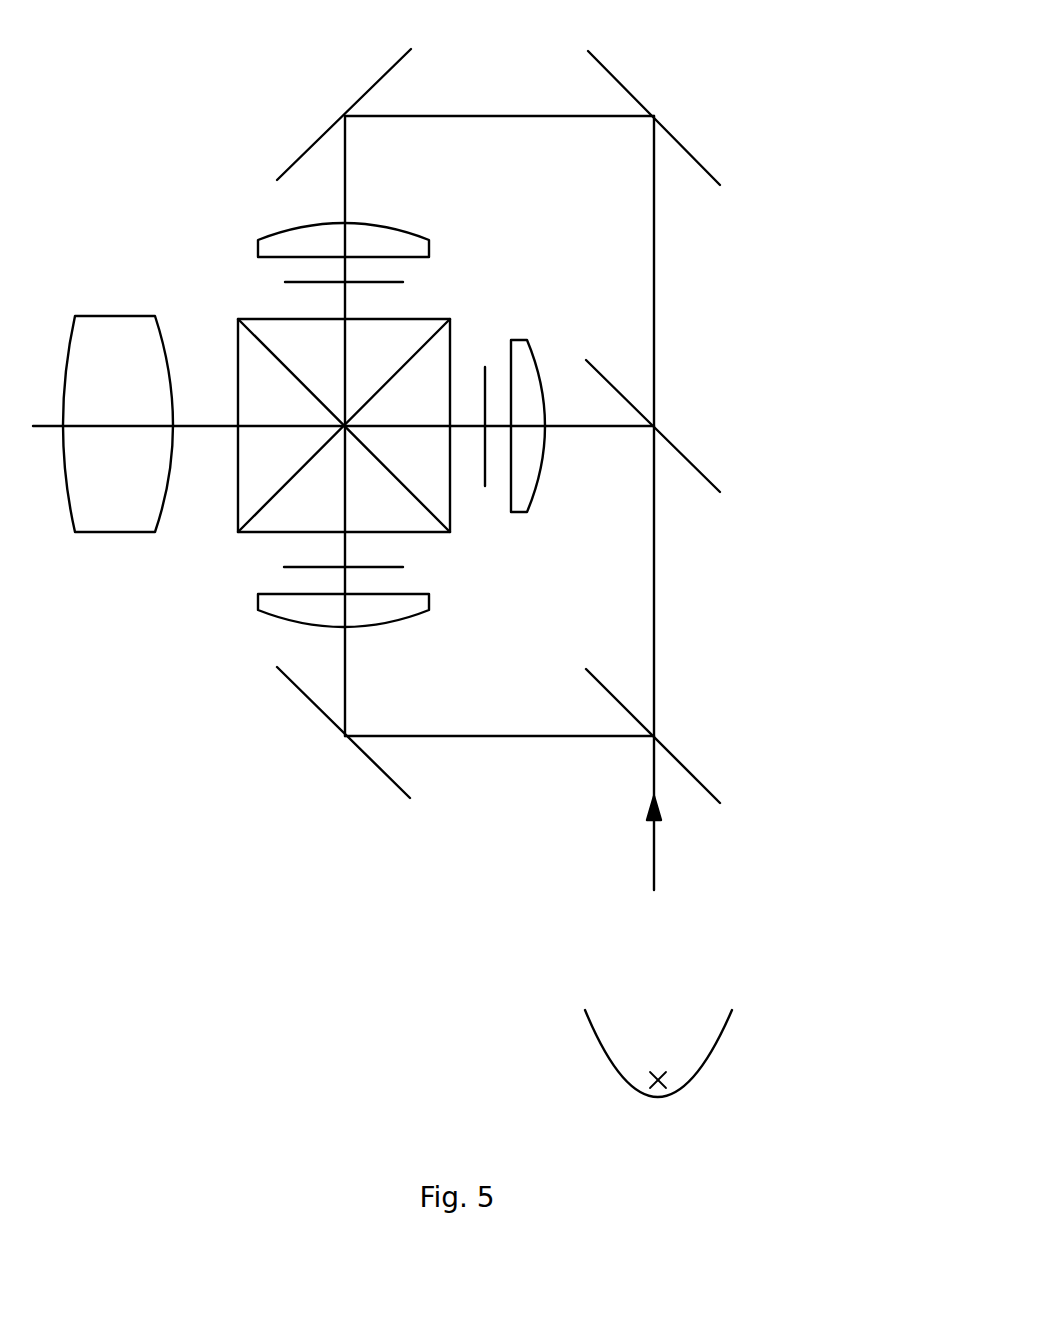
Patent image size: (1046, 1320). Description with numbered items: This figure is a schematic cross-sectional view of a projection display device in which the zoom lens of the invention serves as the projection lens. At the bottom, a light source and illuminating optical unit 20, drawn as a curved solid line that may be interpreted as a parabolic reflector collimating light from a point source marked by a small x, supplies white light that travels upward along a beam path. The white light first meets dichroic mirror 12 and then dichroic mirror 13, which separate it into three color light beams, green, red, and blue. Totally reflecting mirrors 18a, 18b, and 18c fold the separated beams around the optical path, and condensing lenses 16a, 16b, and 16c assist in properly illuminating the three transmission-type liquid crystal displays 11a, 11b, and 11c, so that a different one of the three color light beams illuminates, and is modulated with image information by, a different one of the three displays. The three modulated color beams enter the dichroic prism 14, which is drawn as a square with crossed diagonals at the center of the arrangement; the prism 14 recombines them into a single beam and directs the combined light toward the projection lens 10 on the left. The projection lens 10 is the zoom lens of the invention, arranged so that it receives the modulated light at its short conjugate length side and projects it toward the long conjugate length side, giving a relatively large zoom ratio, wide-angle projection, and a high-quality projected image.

The zoom lens 10 is at (115, 528).
The dichroic prism 14 is at (240, 499).
The transmission-type liquid crystal display 11a is at (388, 565).
The transmission-type liquid crystal display 11b is at (488, 374).
The transmission-type liquid crystal display 11c is at (292, 283).
The condensing lens 16a is at (396, 610).
The condensing lens 16b is at (531, 498).
The condensing lens 16c is at (410, 238).
The totally reflecting mirror 18a is at (372, 771).
The totally reflecting mirror 18b is at (694, 156).
The totally reflecting mirror 18c is at (283, 170).
The dichroic mirror 12 is at (698, 778).
The dichroic mirror 13 is at (698, 470).
The illuminating optical unit 20 is at (756, 1038).